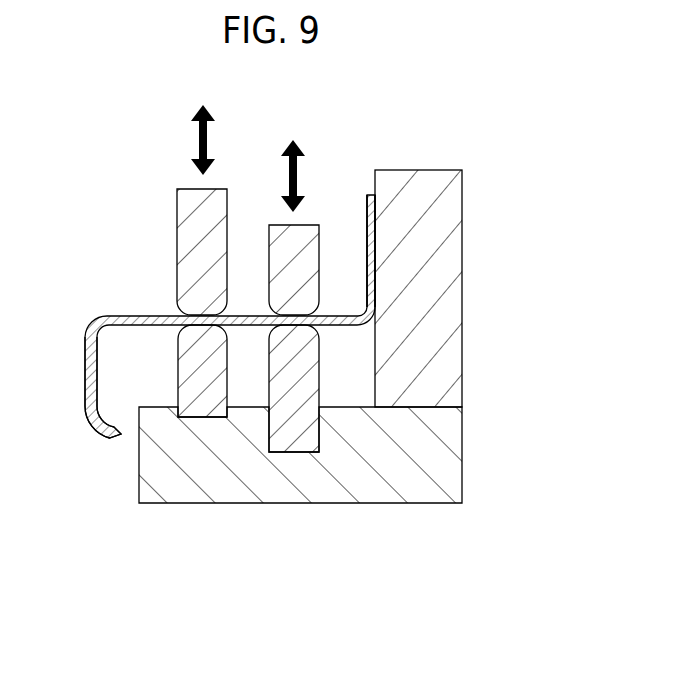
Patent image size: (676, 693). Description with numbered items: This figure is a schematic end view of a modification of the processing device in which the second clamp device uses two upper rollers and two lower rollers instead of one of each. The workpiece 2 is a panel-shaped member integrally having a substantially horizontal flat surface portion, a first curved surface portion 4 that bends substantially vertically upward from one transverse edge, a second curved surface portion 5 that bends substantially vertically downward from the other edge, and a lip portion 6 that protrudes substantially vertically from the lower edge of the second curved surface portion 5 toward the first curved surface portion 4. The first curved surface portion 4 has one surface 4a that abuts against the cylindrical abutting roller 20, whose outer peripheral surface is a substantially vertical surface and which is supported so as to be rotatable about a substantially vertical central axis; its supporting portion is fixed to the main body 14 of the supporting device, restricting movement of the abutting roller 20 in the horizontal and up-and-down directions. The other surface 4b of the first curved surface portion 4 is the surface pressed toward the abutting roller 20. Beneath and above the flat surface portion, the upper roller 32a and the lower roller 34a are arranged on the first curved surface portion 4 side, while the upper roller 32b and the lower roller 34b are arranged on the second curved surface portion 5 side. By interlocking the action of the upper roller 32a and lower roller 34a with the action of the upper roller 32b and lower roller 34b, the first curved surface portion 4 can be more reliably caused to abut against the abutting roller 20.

The workpiece 2 is at (115, 300).
The first curved surface portion 4 is at (371, 197).
The one surface of the first curved surface portion 4a is at (376, 210).
The other surface of the first curved surface portion 4b is at (367, 218).
The second curved surface portion 5 is at (84, 380).
The lip portion 6 is at (112, 445).
The main body 14 is at (312, 504).
The abutting roller 20 is at (462, 293).
The upper roller 32a is at (268, 255).
The upper roller 32b is at (177, 207).
The lower roller 34a is at (311, 330).
The lower roller 34b is at (178, 390).